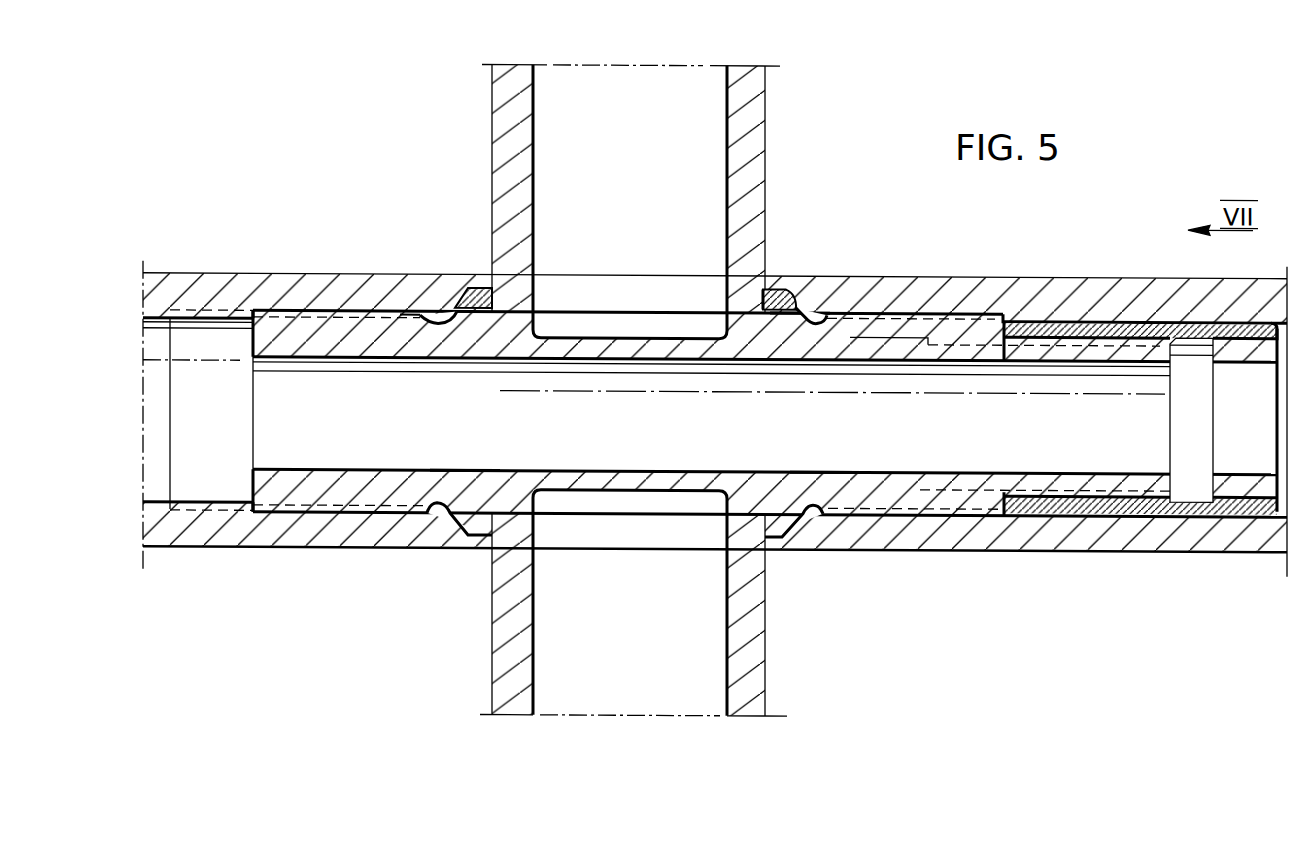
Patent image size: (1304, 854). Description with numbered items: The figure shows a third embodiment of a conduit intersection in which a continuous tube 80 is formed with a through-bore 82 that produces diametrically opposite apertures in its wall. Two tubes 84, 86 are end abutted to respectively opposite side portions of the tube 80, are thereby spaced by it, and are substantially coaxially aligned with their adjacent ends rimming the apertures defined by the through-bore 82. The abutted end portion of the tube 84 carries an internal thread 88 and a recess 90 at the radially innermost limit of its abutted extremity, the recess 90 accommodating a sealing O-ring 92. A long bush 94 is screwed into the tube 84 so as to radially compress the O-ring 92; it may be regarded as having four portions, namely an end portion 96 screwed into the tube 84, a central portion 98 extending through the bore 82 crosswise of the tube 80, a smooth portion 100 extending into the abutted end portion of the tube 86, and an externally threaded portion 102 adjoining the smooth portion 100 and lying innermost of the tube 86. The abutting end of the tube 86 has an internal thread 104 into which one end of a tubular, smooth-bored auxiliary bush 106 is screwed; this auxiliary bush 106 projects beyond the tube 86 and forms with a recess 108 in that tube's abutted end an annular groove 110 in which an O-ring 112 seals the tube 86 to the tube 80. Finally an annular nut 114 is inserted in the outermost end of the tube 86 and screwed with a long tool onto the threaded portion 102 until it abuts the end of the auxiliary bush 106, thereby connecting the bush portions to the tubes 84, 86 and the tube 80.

The continuous tube 80 is at (745, 154).
The through-bore 82 is at (535, 309).
The tube 84 is at (360, 290).
The tube 86 is at (1117, 291).
The internal thread 88 is at (205, 317).
The recess 90 is at (452, 310).
The sealing O-ring 92 is at (475, 285).
The long bush 94 is at (468, 451).
The end portion 96 is at (297, 490).
The central portion 98 is at (675, 474).
The smooth portion 100 is at (825, 483).
The externally threaded portion 102 is at (1102, 503).
The internal thread 104 is at (1030, 312).
The auxiliary bush 106 is at (799, 318).
The recess 108 is at (792, 299).
The annular groove 110 is at (806, 310).
The O-ring 112 is at (770, 286).
The annular nut 114 is at (1238, 496).